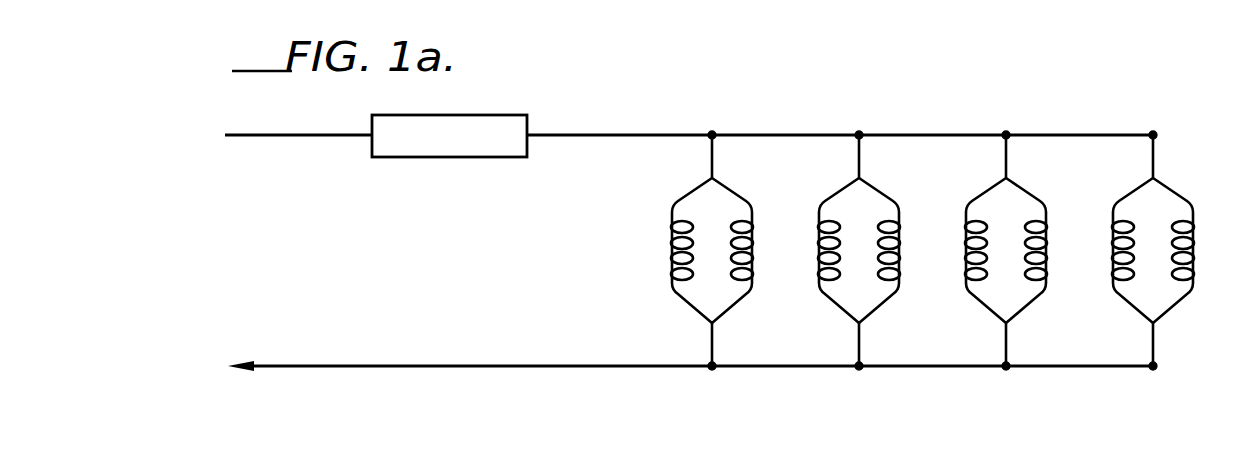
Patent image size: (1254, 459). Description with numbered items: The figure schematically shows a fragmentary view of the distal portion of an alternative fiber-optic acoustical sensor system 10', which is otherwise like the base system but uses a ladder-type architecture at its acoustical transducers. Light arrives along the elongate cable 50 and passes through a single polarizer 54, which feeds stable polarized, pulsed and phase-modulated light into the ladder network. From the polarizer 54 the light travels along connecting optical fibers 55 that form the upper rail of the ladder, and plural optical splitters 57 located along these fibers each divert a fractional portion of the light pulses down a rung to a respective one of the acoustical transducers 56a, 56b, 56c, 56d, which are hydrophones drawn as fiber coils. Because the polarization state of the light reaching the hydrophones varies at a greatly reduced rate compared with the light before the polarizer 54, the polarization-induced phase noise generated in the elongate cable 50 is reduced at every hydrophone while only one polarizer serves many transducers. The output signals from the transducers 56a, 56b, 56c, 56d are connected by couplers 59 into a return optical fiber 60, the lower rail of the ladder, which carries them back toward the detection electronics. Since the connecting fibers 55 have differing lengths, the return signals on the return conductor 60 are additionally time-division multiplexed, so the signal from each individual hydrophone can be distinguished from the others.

The sensor system 10' is at (685, 81).
The elongate cable 50 is at (300, 133).
The polarizer 54 is at (500, 88).
The connecting optical fibers 55 is at (617, 139).
The acoustical transducer 56a is at (668, 304).
The acoustical transducer 56b is at (833, 311).
The acoustical transducer 56c is at (973, 308).
The acoustical transducer 56d is at (1127, 310).
The optical splitters 57 is at (716, 130).
The couplers 59 is at (713, 370).
The return optical fiber 60 is at (362, 365).